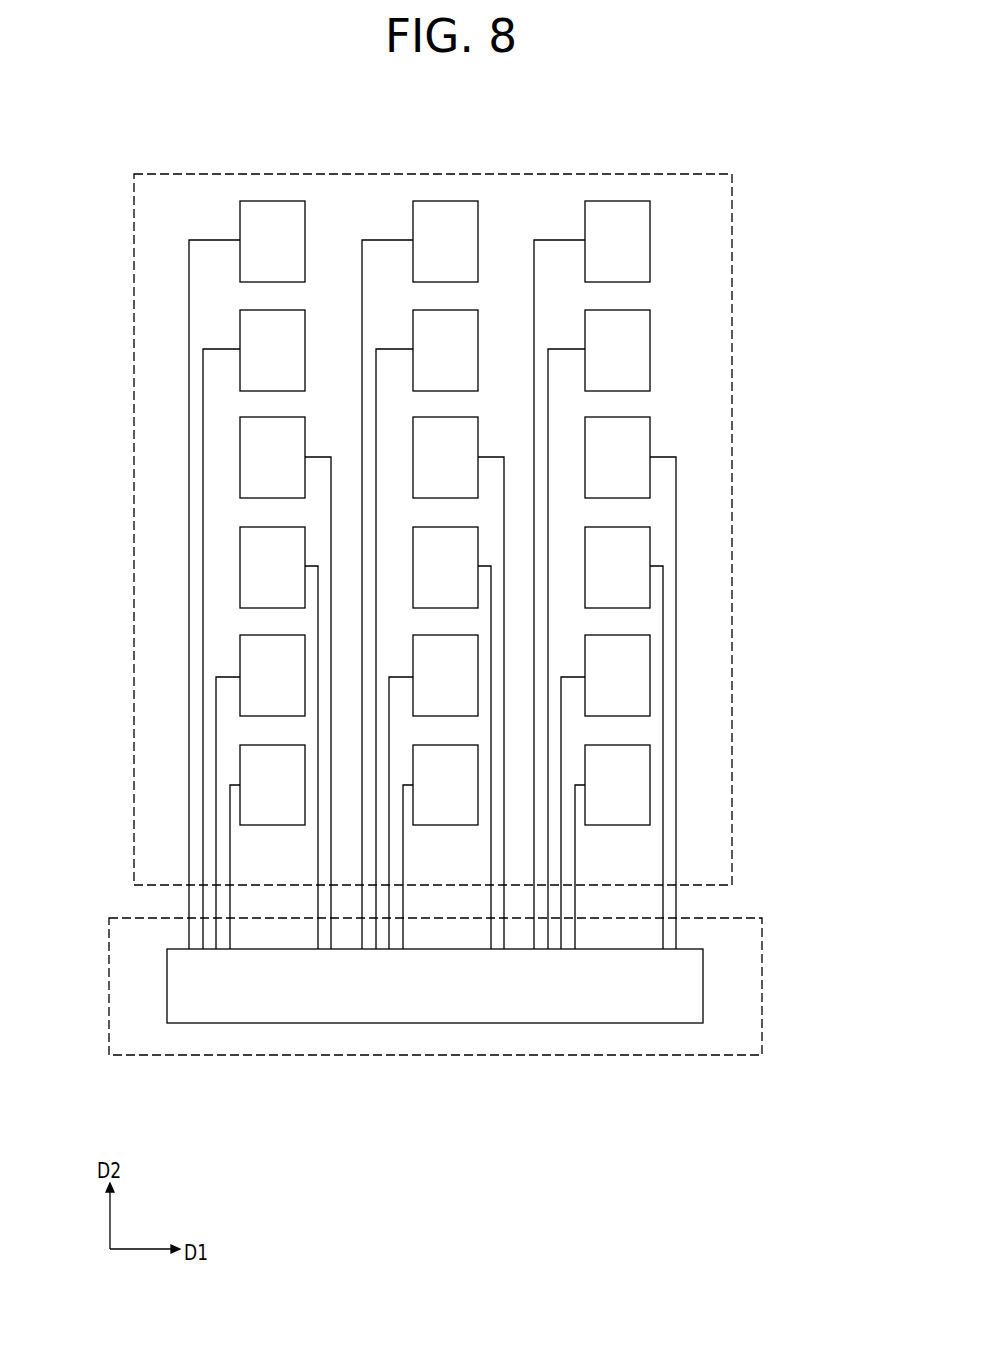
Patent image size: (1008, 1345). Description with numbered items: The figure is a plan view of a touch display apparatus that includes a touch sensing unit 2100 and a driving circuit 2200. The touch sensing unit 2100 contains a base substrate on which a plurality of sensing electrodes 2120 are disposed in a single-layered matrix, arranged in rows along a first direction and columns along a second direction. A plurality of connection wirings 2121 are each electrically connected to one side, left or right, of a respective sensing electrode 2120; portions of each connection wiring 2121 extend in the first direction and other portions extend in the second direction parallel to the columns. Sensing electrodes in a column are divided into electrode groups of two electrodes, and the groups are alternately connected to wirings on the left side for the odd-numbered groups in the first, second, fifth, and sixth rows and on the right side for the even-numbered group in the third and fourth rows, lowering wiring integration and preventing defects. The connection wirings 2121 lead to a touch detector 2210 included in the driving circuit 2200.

The touch sensing unit 2100 is at (732, 325).
The sensing electrode 2120 is at (268, 201).
The connection wiring 2121 is at (189, 292).
The driving circuit 2200 is at (762, 982).
The touch detector 2210 is at (435, 986).